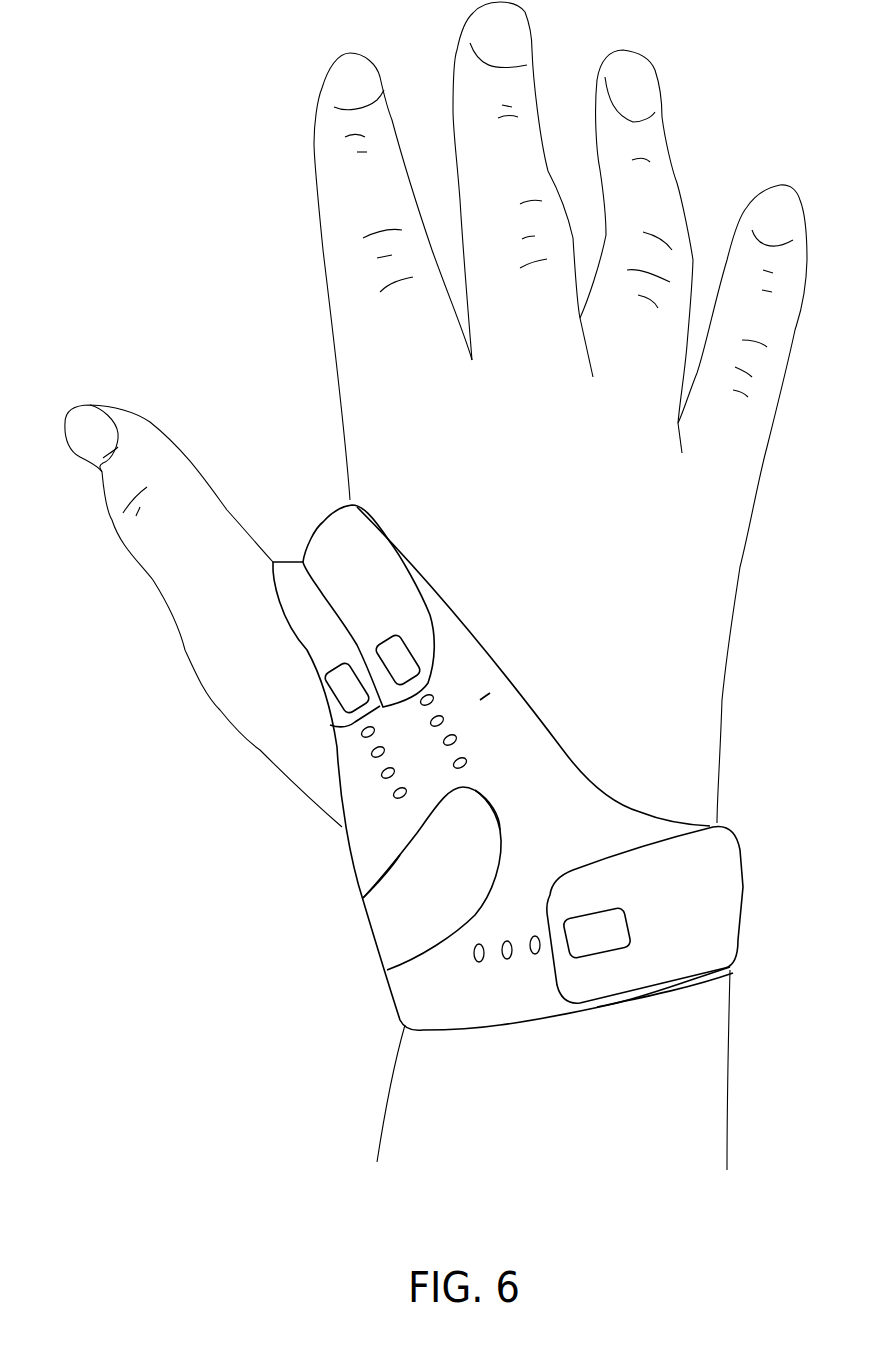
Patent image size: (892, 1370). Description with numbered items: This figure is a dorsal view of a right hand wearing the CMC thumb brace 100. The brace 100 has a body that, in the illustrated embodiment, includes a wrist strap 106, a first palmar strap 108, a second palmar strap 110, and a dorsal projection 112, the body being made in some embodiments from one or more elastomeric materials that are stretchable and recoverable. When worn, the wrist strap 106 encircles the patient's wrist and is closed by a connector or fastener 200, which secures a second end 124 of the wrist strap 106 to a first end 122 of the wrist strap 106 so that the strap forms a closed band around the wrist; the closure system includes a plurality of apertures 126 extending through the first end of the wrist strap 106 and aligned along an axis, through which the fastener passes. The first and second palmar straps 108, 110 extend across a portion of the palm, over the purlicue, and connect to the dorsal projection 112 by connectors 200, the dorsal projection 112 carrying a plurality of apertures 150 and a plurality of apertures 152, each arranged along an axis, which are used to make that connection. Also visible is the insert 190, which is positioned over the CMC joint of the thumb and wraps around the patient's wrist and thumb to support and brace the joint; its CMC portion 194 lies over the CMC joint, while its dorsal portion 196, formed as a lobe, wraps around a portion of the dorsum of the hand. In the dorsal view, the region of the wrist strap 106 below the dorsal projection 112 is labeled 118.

The brace 100 is at (646, 603).
The wrist strap 106 is at (437, 986).
The first palmar strap 108 is at (362, 550).
The second palmar strap 110 is at (297, 570).
The dorsal projection 112 is at (480, 700).
The wrist edge 118 is at (500, 1025).
The first end 122 is at (513, 1014).
The second end 124 is at (716, 957).
The apertures 126 is at (500, 943).
The apertures 150 is at (434, 700).
The apertures 152 is at (373, 757).
The insert 190 is at (459, 887).
The CMC portion 194 is at (380, 905).
The dorsal portion 196 is at (488, 833).
The connector 200 is at (383, 635).